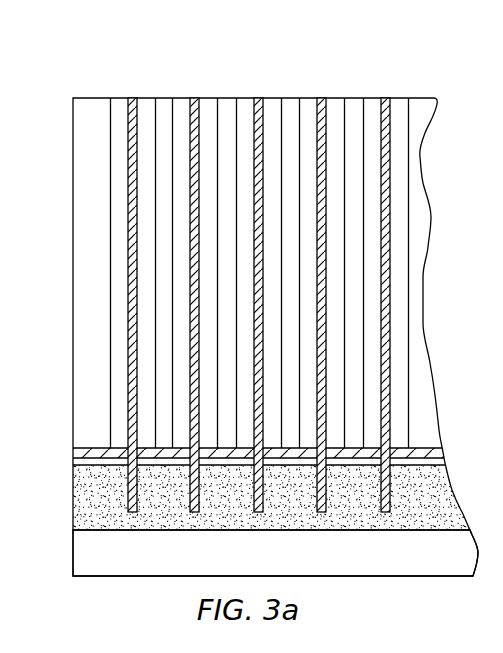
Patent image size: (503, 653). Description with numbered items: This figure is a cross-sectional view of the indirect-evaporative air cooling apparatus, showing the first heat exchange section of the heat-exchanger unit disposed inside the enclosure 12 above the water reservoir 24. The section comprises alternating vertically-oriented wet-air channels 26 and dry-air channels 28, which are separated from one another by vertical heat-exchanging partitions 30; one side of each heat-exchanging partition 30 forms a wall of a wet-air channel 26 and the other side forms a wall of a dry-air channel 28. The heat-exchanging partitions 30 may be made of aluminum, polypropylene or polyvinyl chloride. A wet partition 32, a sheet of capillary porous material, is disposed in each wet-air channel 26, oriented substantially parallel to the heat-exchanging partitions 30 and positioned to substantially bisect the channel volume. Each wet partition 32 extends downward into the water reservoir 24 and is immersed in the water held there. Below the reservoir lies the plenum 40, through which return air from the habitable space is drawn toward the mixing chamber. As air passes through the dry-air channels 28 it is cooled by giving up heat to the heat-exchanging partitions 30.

The enclosure 12 is at (72, 351).
The water reservoir 24 is at (78, 497).
The wet-air channel 26 is at (400, 102).
The dry-air channel 28 is at (357, 102).
The heat-exchanging partition 30 is at (172, 272).
The wet partition 32 is at (385, 102).
The plenum 40 is at (275, 553).